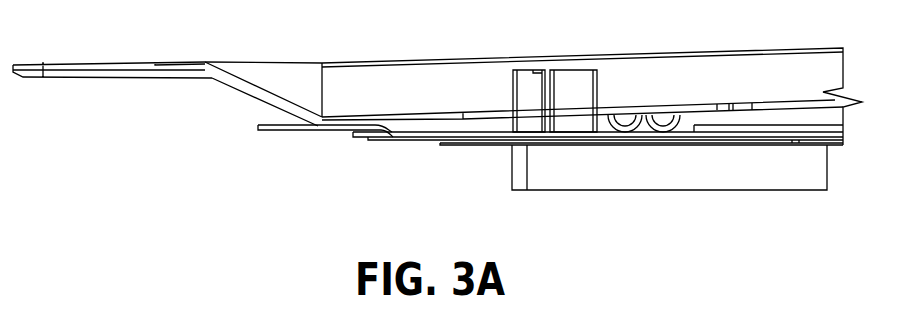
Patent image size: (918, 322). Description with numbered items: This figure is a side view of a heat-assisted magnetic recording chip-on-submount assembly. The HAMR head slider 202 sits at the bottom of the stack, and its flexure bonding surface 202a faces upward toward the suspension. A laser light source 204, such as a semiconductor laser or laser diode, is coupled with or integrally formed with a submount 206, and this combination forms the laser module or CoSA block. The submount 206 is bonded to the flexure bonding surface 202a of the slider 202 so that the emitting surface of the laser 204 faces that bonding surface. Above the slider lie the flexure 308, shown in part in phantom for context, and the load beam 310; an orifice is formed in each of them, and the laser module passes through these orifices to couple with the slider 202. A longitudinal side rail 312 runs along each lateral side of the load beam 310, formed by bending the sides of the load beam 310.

The load beam 310 is at (400, 77).
The longitudinal side rail 312 is at (755, 63).
The laser light source 204 is at (528, 94).
The submount 206 is at (585, 92).
The flexure 308 is at (440, 140).
The HAMR head slider 202 is at (800, 175).
The flexure bonding surface 202a is at (814, 145).